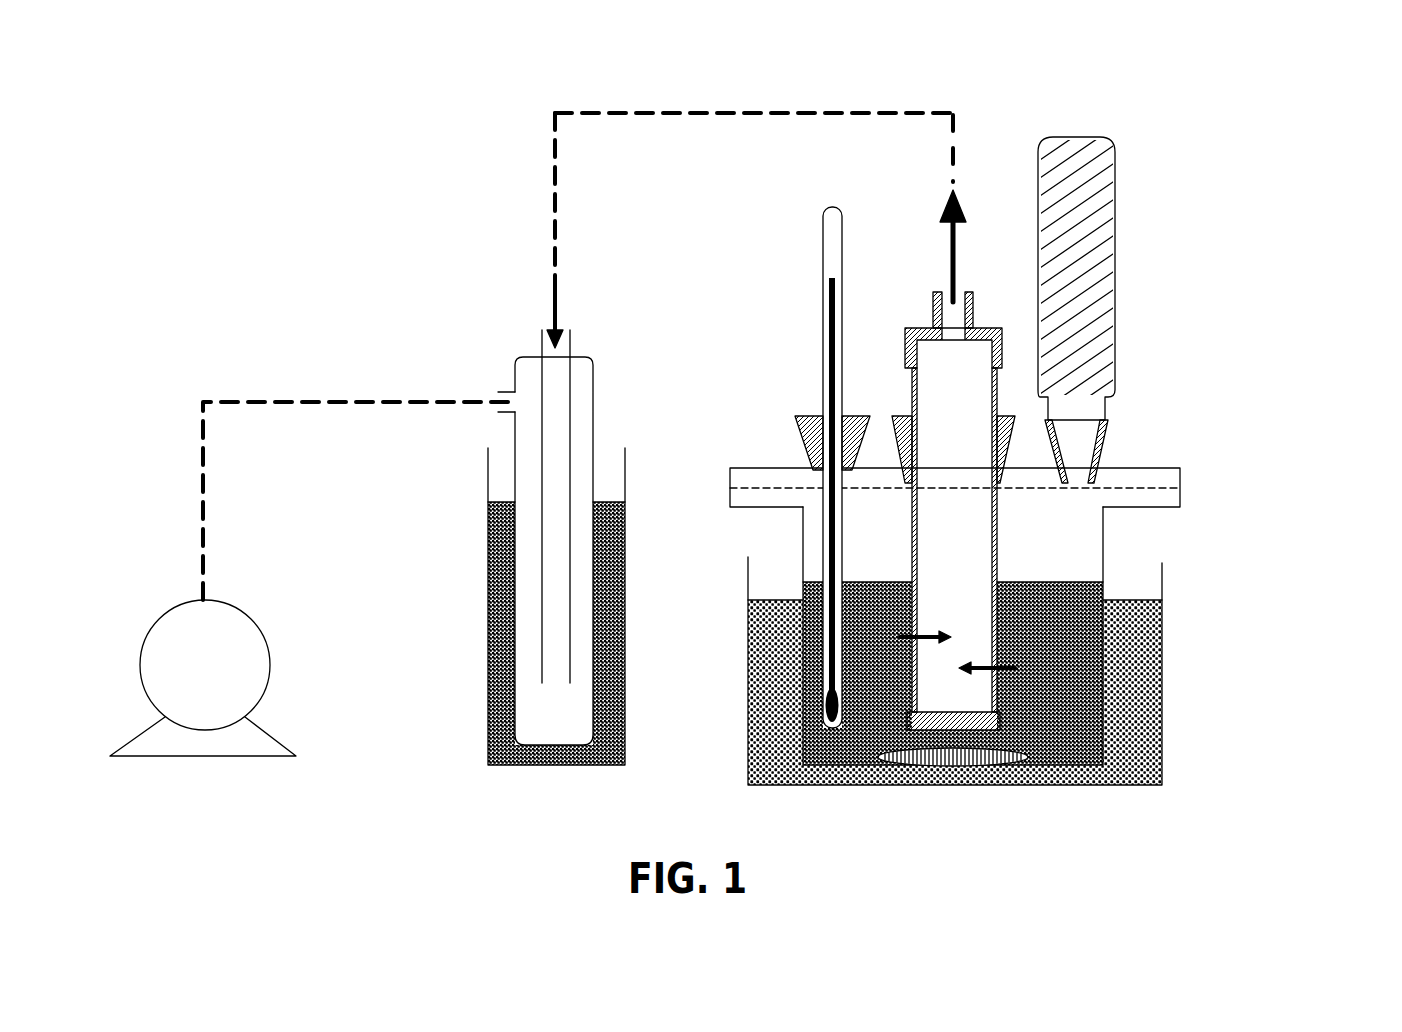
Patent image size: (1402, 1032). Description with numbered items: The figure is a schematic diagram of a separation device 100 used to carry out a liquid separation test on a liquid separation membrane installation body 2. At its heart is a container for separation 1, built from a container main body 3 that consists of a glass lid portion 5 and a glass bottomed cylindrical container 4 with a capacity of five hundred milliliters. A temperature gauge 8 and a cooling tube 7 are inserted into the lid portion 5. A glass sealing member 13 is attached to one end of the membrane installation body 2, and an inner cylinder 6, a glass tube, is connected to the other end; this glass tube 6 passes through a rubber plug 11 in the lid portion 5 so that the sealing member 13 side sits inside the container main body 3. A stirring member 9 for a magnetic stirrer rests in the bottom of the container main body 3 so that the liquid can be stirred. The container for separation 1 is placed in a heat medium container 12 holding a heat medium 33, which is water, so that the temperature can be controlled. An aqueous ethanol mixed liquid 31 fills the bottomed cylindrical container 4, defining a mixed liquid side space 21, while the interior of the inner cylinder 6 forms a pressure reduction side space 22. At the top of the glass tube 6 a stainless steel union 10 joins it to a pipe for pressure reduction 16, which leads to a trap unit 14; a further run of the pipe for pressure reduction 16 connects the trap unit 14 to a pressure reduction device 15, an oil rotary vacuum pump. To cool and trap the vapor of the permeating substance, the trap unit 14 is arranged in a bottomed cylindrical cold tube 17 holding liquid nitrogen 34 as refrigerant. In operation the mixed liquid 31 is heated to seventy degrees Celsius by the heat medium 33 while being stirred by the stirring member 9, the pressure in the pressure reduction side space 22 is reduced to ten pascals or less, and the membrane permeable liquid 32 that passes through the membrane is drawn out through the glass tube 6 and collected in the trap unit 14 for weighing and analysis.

The separation device 100 is at (1236, 136).
The container for separation 1 is at (1347, 470).
The liquid separation membrane installation body 2 is at (1000, 635).
The container main body 3 is at (1025, 606).
The bottomed cylindrical container 4 is at (1100, 545).
The lid portion 5 is at (1177, 478).
The inner cylinder 6 is at (917, 398).
The cooling tube 7 is at (1113, 337).
The temperature gauge 8 is at (822, 338).
The stirring member 9 is at (1028, 757).
The union 10 is at (972, 310).
The rubber plug 11 is at (797, 420).
The heat medium container 12 is at (1162, 718).
The sealing member 13 is at (1001, 725).
The trap unit 14 is at (513, 372).
The pressure reduction device 15 is at (228, 620).
The pipe for pressure reduction 16 is at (273, 398).
The cold tube 17 is at (488, 558).
The mixed liquid side space 21 is at (1082, 703).
The pressure reduction side space 22 is at (940, 520).
The mixed liquid 31 is at (1058, 657).
The membrane permeable liquid 32 is at (950, 265).
The heat medium 33 is at (775, 690).
The liquid nitrogen 34 is at (505, 708).